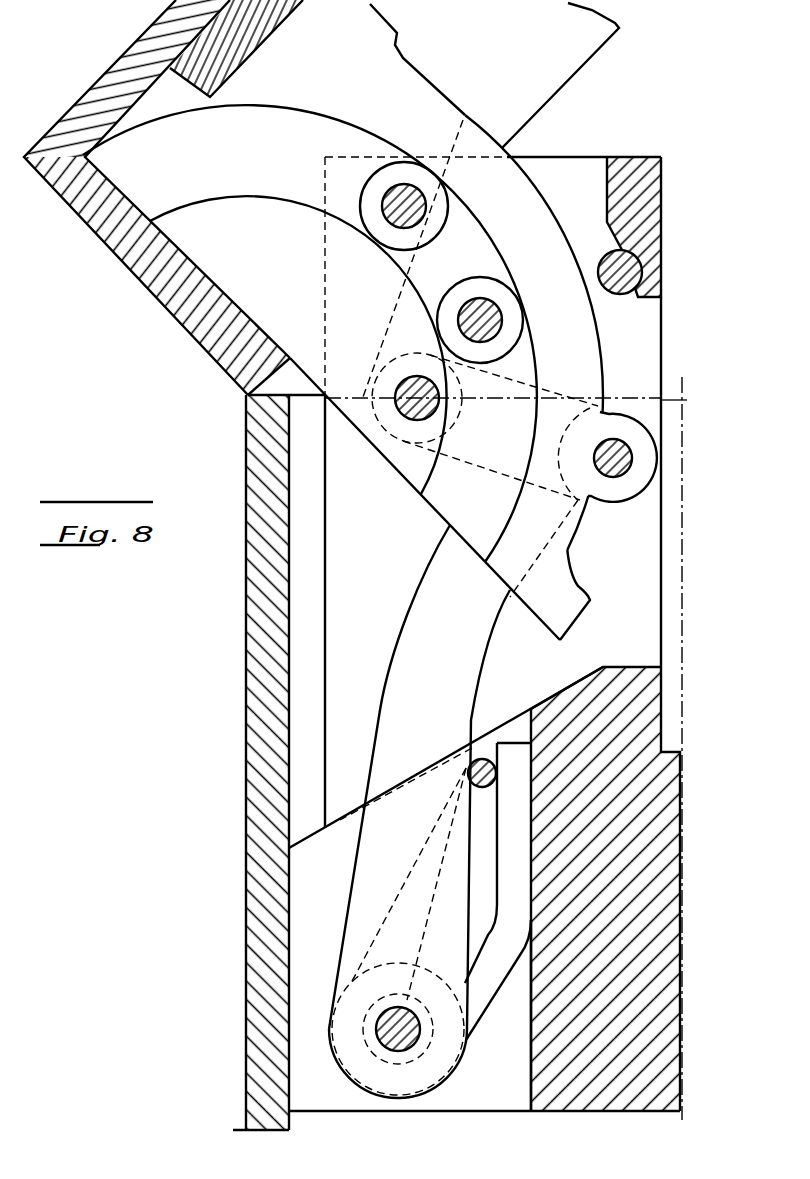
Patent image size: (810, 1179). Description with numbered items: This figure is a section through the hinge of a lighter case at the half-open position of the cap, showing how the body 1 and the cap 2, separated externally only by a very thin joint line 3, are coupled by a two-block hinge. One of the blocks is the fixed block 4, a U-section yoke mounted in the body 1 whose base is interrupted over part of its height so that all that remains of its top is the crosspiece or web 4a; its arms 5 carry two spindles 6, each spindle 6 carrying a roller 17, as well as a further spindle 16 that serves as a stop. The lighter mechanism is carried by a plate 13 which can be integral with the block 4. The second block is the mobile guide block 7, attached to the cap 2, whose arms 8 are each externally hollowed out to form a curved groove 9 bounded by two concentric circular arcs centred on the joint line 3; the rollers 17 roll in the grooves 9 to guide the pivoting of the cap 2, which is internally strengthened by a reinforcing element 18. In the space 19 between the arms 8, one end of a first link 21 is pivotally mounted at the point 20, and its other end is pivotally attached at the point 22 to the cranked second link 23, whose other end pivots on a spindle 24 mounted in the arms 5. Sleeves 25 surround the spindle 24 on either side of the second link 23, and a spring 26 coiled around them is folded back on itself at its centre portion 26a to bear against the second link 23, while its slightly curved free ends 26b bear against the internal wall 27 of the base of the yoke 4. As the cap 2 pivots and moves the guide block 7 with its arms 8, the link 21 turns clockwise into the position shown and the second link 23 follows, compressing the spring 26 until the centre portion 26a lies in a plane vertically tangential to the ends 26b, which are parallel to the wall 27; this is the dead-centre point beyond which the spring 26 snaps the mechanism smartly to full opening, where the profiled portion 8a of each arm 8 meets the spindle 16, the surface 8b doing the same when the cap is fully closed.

The body 1 is at (262, 712).
The cap 2 is at (98, 213).
The joint line 3 is at (247, 396).
The fixed block 4 is at (607, 700).
The crosspiece or web 4a is at (625, 167).
The arms 5 is at (535, 167).
The spindles 6 is at (381, 217).
The mobile guide block 7 is at (332, 29).
The arms 8 is at (527, 213).
The profiled portion 8a is at (573, 572).
The surface 8b is at (402, 44).
The curved groove 9 is at (273, 108).
The plate 13 is at (667, 750).
The spindle 16 is at (645, 273).
The roller 17 is at (401, 172).
The reinforcing element 18 is at (227, 43).
The space 19 is at (393, 306).
The pivot point 20 is at (407, 408).
The first link 21 is at (473, 463).
The pivot point 22 is at (611, 437).
The second link 23 is at (420, 618).
The spindle 24 is at (397, 1037).
The sleeves 25 is at (363, 1048).
The spring 26 is at (390, 922).
The centre portion 26a is at (468, 768).
The free ends 26b is at (513, 757).
The internal wall 27 is at (531, 1055).